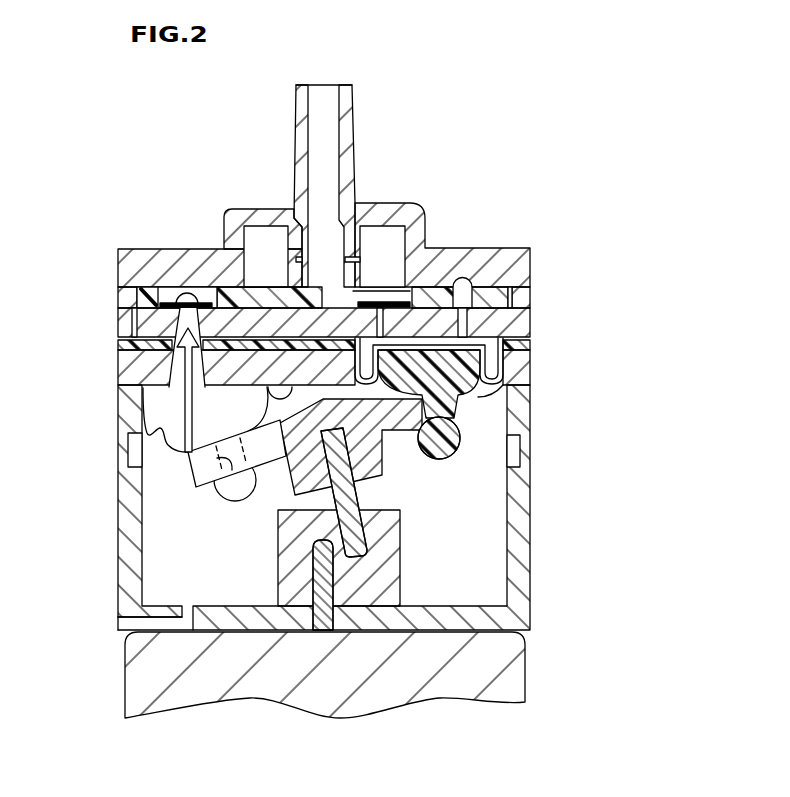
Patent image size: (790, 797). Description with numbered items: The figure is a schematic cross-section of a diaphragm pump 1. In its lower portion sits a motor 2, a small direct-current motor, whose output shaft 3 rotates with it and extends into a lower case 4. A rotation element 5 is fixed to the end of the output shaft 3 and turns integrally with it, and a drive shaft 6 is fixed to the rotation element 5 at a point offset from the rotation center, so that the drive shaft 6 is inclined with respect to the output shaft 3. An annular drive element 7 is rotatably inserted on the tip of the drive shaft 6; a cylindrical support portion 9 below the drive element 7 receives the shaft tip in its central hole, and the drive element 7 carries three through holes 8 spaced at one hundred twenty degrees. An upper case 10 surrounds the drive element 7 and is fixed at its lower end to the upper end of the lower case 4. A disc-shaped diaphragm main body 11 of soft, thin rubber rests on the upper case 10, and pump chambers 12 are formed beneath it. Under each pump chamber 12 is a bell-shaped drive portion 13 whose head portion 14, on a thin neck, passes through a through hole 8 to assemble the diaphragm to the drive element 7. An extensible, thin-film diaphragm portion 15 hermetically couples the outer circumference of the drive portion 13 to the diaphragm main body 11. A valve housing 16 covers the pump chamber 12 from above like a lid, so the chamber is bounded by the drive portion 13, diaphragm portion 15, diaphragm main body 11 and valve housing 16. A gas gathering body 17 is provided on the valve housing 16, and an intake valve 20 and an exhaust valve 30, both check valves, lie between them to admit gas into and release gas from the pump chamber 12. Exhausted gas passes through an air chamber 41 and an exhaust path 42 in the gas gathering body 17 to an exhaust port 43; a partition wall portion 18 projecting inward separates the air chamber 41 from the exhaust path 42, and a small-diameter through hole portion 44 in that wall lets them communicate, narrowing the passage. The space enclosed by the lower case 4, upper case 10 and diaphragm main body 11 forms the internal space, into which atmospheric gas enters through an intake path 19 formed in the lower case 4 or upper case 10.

The diaphragm pump 1 is at (540, 129).
The motor 2 is at (143, 673).
The output shaft 3 is at (313, 575).
The lower case 4 is at (518, 560).
The rotation element 5 is at (300, 538).
The drive shaft 6 is at (343, 498).
The drive element 7 is at (395, 478).
The through hole 8 is at (235, 487).
The support portion 9 is at (377, 465).
The upper case 10 is at (518, 377).
The diaphragm main body 11 is at (142, 347).
The pump chamber 12 is at (510, 363).
The drive portion 13 is at (160, 453).
The head portion 14 is at (292, 490).
The diaphragm portion 15 is at (153, 433).
The valve housing 16 is at (132, 323).
The gas gathering body 17 is at (248, 215).
The partition wall portion 18 is at (297, 260).
The intake path 19 is at (133, 622).
The intake valve 20 is at (170, 298).
The exhaust valve 30 is at (402, 290).
The air chamber 41 is at (259, 262).
The exhaust path 42 is at (322, 114).
The exhaust port 43 is at (322, 84).
The through hole portion 44 is at (383, 298).